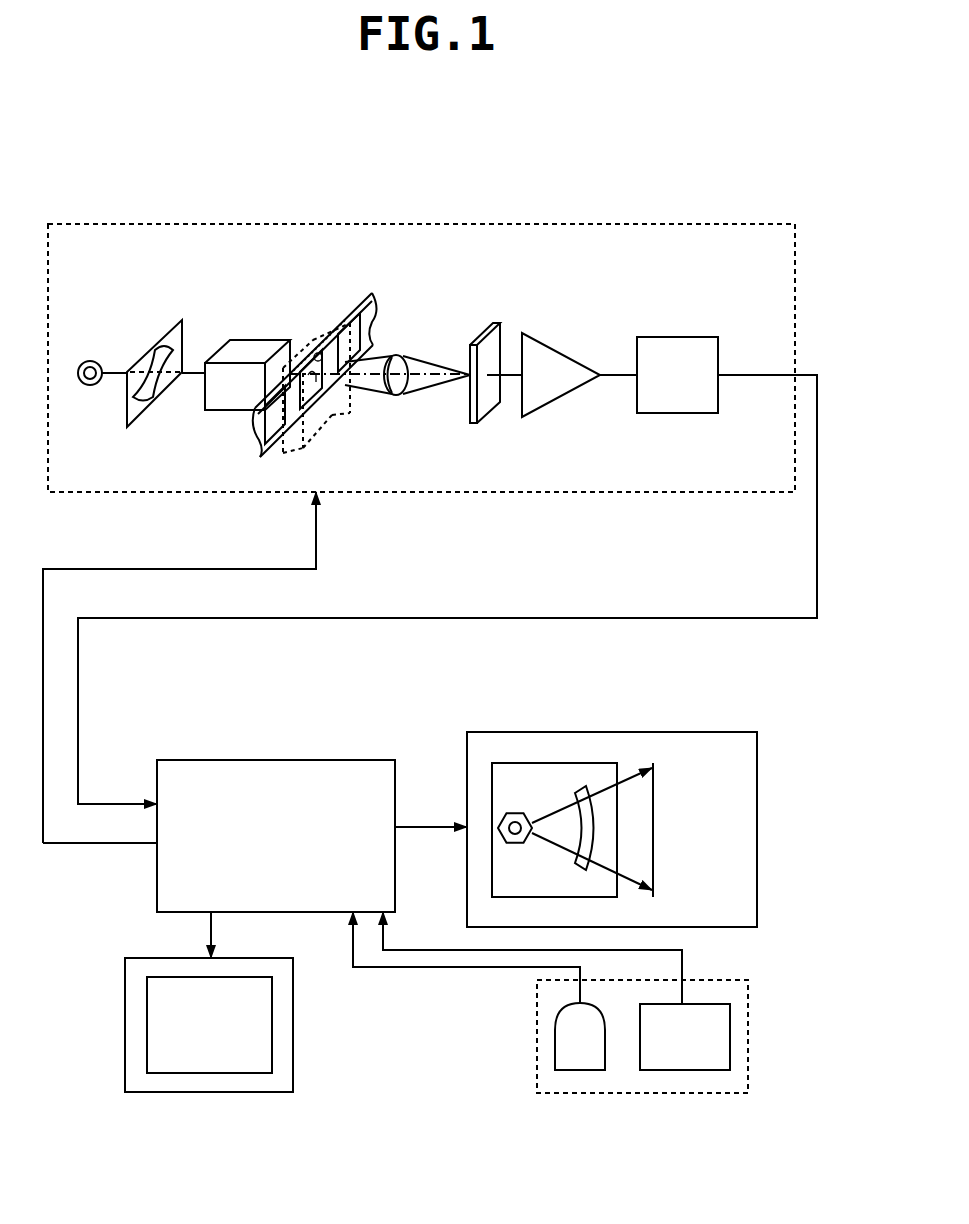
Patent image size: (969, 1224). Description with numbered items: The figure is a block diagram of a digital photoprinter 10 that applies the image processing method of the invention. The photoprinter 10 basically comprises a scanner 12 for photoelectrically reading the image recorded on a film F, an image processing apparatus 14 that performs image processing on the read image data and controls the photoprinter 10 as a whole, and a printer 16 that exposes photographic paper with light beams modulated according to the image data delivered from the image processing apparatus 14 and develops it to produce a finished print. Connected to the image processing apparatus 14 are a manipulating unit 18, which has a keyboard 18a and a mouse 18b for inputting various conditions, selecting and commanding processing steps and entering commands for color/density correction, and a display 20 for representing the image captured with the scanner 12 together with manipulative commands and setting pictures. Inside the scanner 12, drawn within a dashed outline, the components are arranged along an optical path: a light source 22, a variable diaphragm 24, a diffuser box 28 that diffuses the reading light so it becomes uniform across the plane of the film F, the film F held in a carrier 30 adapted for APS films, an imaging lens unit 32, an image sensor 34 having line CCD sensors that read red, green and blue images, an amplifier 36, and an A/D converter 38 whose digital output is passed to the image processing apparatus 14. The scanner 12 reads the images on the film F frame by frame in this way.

The photoprinter 10 is at (676, 200).
The scanner 12 is at (257, 224).
The image processing apparatus 14 is at (271, 760).
The printer 16 is at (607, 732).
The manipulating unit 18 is at (623, 1097).
The keyboard 18a is at (687, 1072).
The mouse 18b is at (577, 1070).
The display 20 is at (200, 1093).
The light source 22 is at (90, 360).
The variable diaphragm 24 is at (162, 338).
The diffuser box 28 is at (244, 356).
The film F is at (360, 307).
The carrier 30 is at (332, 410).
The imaging lens unit 32 is at (395, 355).
The image sensor 34 is at (488, 350).
The amplifier 36 is at (563, 399).
The A/D converter 38 is at (692, 337).